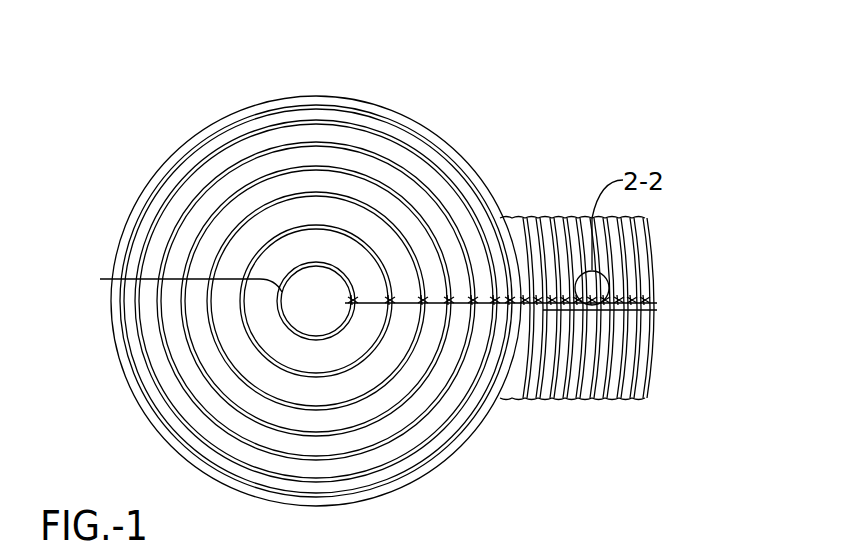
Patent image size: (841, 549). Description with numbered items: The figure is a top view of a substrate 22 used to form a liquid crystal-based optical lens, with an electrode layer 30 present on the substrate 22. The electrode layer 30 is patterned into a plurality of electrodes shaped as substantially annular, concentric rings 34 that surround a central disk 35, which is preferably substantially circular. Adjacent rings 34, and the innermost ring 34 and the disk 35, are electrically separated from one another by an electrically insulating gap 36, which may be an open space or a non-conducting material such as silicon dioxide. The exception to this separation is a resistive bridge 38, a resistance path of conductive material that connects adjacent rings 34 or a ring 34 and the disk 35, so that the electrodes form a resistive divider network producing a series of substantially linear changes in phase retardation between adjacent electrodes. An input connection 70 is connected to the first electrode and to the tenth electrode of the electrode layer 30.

The substrate 22 is at (190, 120).
The electrode layer 30 is at (173, 176).
The rings 34 is at (173, 338).
The central disk 35 is at (177, 281).
The electrically insulating gap 36 is at (185, 215).
The resistive bridge 38 is at (390, 292).
The input connection 70 is at (657, 303).